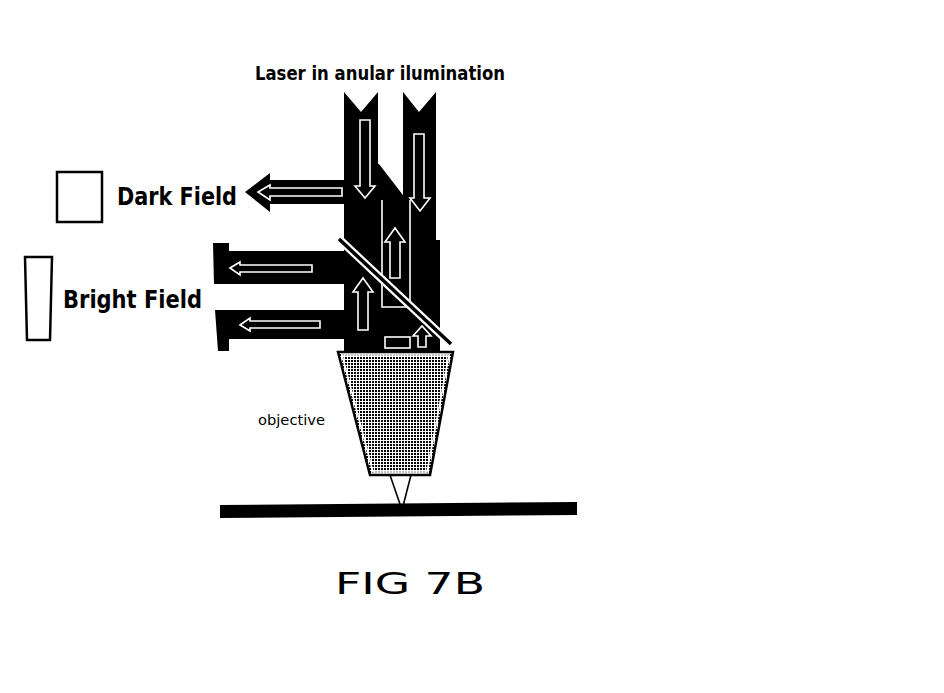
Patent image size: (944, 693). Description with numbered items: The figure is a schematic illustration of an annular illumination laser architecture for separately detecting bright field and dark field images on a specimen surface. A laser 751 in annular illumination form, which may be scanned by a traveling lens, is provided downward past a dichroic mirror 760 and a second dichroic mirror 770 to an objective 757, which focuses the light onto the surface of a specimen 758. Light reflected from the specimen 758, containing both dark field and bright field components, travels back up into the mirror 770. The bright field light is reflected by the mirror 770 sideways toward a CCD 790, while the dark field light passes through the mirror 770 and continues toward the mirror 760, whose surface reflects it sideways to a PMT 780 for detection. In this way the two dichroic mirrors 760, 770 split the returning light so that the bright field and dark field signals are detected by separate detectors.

The laser 751 is at (437, 113).
The dichroic mirror 760 is at (437, 170).
The dichroic mirror 770 is at (440, 312).
The objective 757 is at (460, 411).
The specimen 758 is at (520, 493).
The PMT 780 is at (95, 164).
The CCD 790 is at (60, 273).